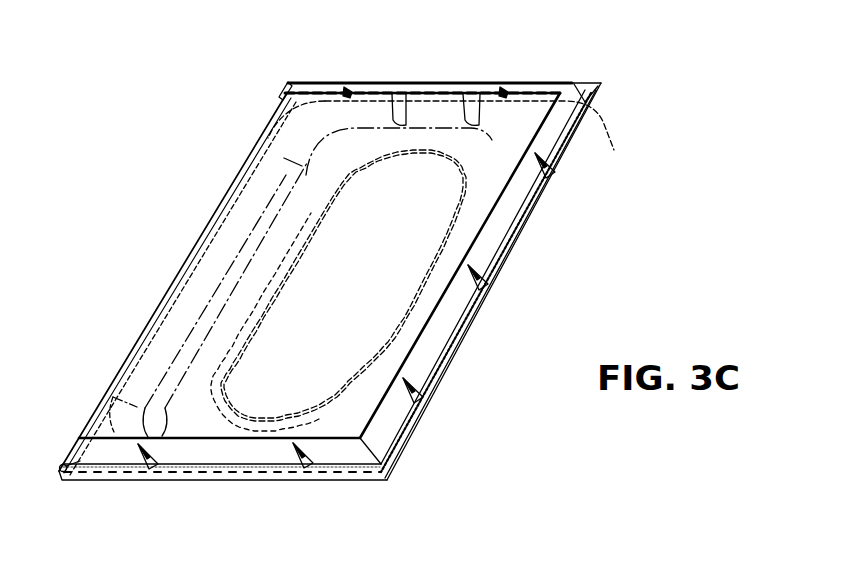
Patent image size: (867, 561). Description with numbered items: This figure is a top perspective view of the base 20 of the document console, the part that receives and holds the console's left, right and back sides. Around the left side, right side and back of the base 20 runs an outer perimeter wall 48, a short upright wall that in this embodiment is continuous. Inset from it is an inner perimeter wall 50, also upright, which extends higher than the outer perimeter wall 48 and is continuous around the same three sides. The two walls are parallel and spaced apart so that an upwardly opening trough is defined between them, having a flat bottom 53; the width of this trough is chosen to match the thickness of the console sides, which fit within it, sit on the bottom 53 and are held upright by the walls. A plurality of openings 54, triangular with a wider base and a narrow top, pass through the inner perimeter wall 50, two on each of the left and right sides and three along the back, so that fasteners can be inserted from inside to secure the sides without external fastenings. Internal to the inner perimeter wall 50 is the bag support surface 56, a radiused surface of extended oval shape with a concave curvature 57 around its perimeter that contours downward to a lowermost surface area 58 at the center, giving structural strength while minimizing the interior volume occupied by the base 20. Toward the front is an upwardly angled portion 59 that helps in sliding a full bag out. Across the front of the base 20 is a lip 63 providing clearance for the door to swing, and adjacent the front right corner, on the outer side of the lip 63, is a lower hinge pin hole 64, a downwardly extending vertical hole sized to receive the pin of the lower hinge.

The base 20 is at (136, 108).
The outer perimeter wall 48 is at (585, 82).
The inner perimeter wall 50 is at (410, 82).
The flat bottom 53 is at (596, 92).
The openings 54 is at (347, 88).
The bag support surface 56 is at (503, 165).
The concave curvature 57 is at (486, 118).
The lowermost surface area 58 is at (361, 295).
The upwardly angled portion 59 is at (258, 186).
The lip 63 is at (210, 220).
The lower hinge pin hole 64 is at (63, 464).